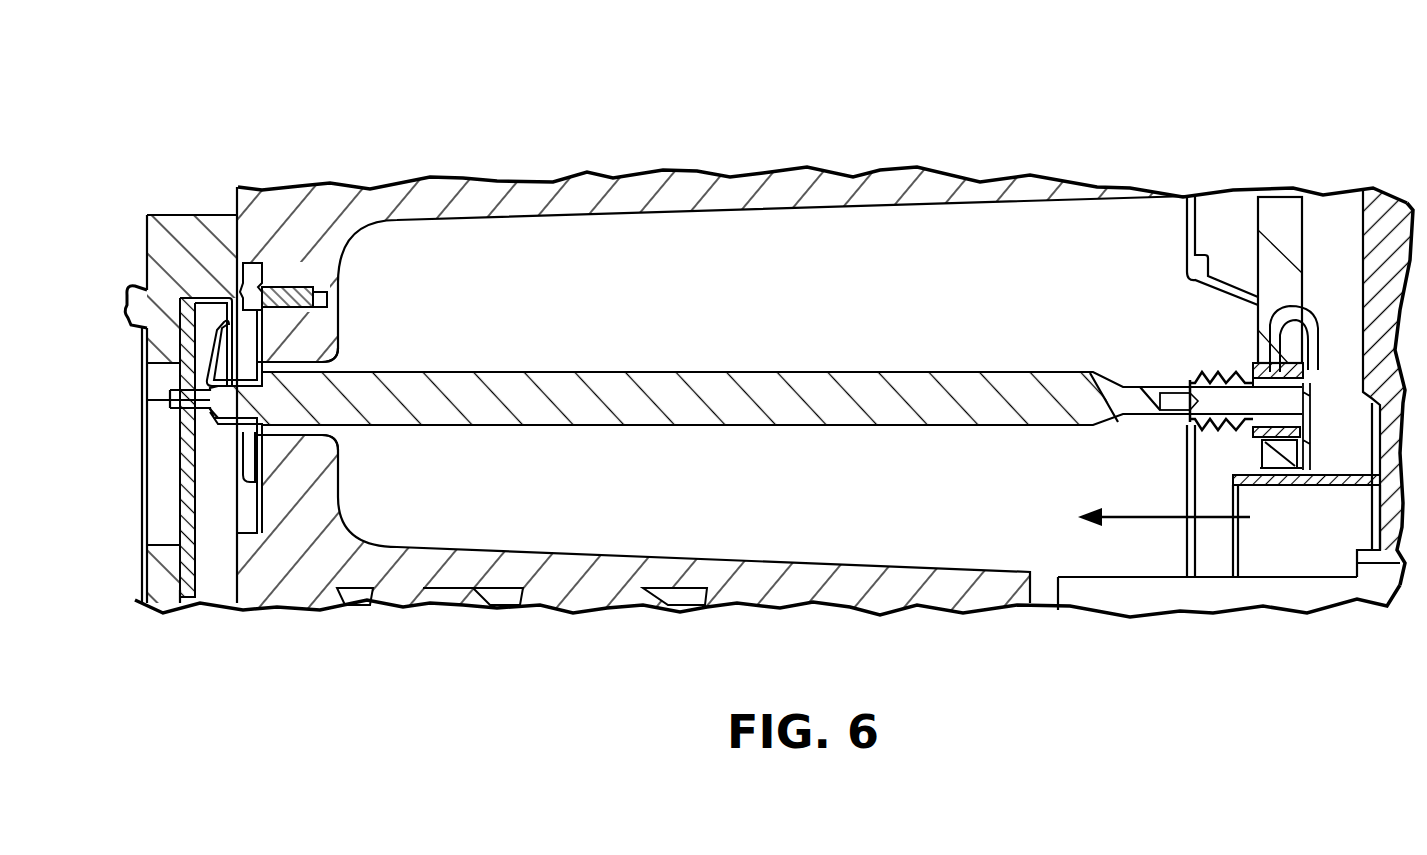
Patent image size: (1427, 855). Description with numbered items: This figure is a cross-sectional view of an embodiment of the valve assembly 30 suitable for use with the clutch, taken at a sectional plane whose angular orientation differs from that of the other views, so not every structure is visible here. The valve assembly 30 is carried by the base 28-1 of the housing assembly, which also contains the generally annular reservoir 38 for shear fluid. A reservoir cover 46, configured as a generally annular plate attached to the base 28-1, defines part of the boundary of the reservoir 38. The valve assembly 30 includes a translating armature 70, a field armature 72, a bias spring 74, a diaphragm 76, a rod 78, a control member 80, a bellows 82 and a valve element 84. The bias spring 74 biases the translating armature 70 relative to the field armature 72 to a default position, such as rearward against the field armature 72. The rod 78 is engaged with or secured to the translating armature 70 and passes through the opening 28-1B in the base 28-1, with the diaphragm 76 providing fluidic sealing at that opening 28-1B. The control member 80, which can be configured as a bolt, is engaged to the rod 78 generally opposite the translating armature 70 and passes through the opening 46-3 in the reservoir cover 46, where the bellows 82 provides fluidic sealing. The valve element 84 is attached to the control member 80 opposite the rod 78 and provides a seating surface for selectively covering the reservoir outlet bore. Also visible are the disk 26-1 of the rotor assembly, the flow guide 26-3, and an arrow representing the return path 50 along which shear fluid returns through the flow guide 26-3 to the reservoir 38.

The base 28-1 is at (868, 200).
The opening 28-1B is at (338, 370).
The valve assembly 30 is at (712, 376).
The reservoir 38 is at (891, 307).
The field armature 72 is at (158, 220).
The translating armature 70 is at (204, 297).
The bias spring 74 is at (338, 333).
The diaphragm 76 is at (225, 427).
The rod 78 is at (903, 425).
The reservoir cover 46 is at (1280, 218).
The opening 46-3 is at (1271, 365).
The control member 80 is at (1195, 419).
The bellows 82 is at (1228, 431).
The return path 50 is at (1150, 516).
The flow guide 26-3 is at (1287, 476).
The valve element 84 is at (1300, 452).
The disk 26-1 is at (1373, 192).